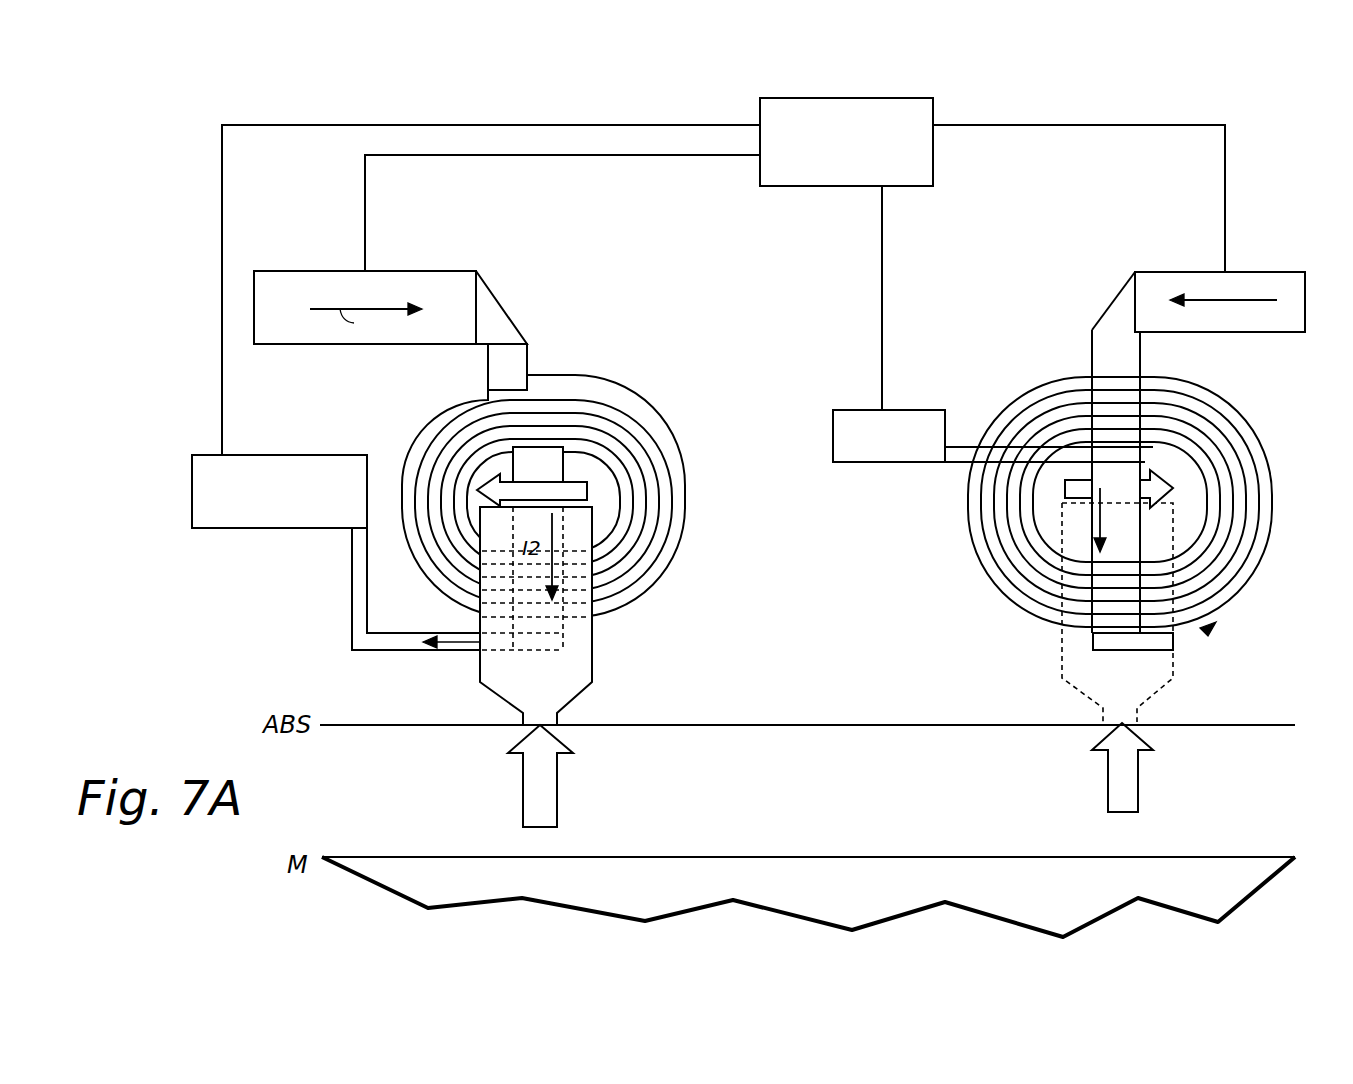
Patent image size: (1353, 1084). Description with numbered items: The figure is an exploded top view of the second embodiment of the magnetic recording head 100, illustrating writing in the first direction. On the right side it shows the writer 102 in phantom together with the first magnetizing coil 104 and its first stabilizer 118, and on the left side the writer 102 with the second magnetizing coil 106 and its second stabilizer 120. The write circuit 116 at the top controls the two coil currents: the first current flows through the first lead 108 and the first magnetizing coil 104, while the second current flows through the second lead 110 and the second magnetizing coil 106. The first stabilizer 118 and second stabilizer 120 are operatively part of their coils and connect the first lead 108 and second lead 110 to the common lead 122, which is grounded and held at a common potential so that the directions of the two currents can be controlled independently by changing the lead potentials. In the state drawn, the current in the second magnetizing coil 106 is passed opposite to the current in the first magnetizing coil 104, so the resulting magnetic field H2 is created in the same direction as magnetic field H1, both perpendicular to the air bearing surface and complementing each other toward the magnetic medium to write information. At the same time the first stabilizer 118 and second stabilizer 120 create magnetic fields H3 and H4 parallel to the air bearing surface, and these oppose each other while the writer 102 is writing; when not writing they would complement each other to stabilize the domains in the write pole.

The magnetic recording head 100 is at (1104, 96).
The writer 102 is at (572, 697).
The first magnetizing coil 104 is at (1230, 407).
The second magnetizing coil 106 is at (635, 395).
The first lead 108 is at (1268, 335).
The second lead 110 is at (430, 344).
The write circuit 116 is at (812, 186).
The first stabilizer 118 is at (1137, 515).
The second stabilizer 120 is at (565, 523).
The common lead 122 is at (310, 530).
The magnetic field H1 is at (1138, 782).
The magnetic field H2 is at (560, 795).
The magnetic field H3 is at (1160, 467).
The magnetic field H4 is at (587, 490).